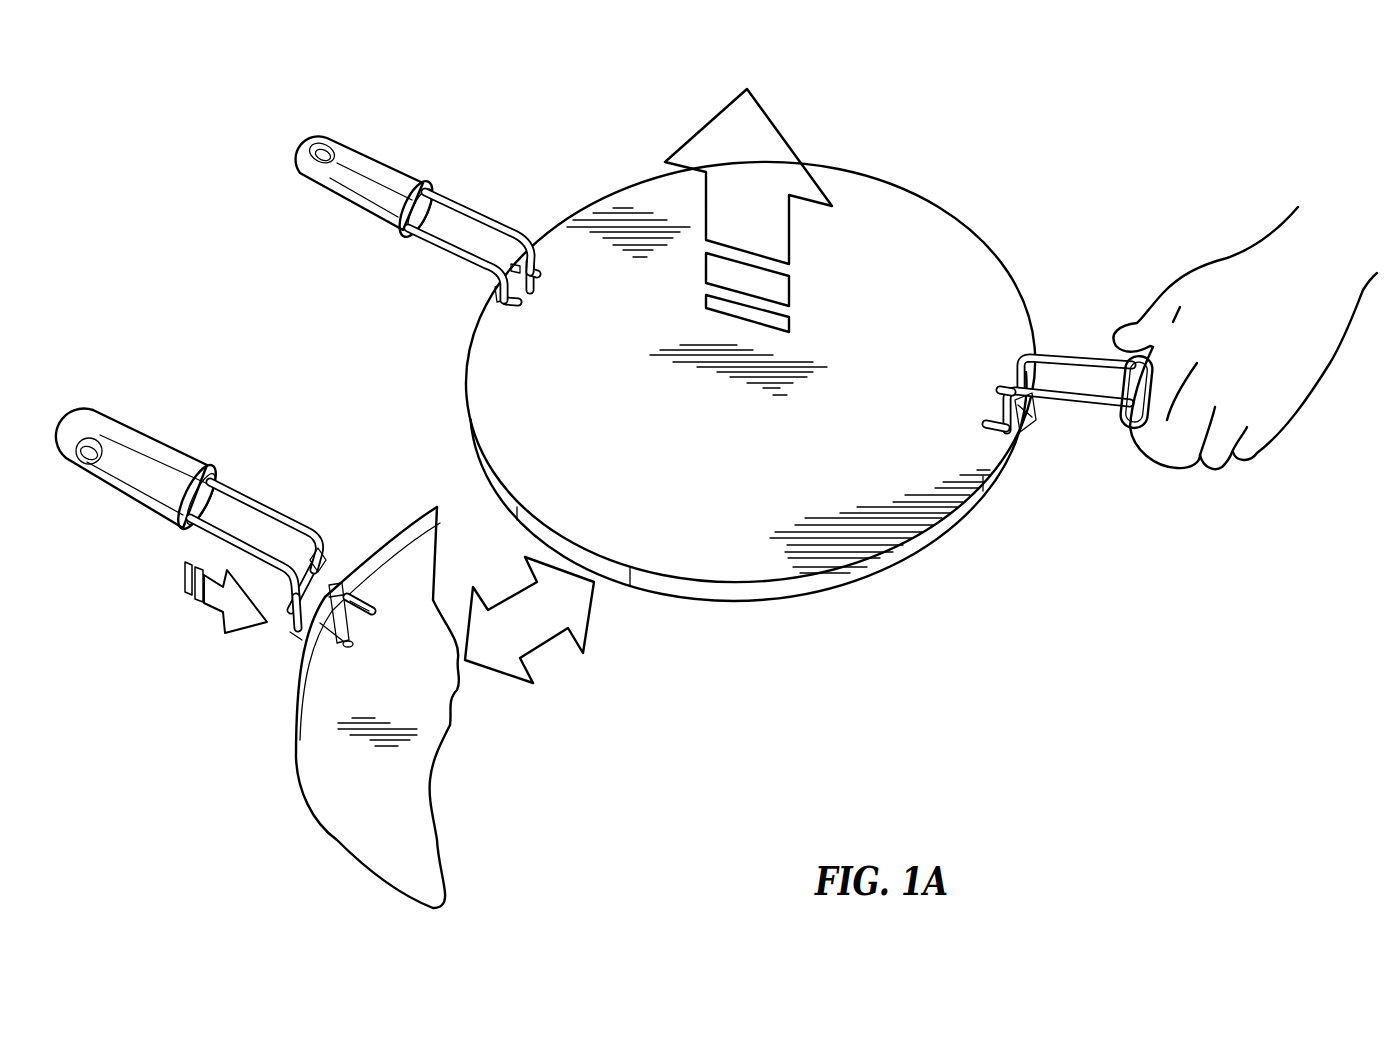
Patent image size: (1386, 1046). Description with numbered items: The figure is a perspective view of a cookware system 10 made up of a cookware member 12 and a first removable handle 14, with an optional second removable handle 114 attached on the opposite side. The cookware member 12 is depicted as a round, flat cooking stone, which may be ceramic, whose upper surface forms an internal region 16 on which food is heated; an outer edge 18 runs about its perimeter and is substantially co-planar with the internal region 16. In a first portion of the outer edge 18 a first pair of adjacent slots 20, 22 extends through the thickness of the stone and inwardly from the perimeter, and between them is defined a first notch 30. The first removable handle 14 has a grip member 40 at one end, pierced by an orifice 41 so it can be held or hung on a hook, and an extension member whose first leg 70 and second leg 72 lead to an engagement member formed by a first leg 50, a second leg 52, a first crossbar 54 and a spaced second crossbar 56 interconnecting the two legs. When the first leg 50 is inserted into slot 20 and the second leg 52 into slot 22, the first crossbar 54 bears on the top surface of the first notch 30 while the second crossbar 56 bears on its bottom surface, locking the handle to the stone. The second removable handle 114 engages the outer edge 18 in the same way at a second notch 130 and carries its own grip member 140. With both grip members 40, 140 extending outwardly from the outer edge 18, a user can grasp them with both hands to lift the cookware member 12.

The cookware system 10 is at (781, 498).
The cookware member 12 is at (932, 183).
The first removable handle 14 is at (292, 409).
The internal region 16 is at (955, 277).
The outer edge 18 is at (670, 590).
The slot 20 is at (536, 268).
The slot 22 is at (509, 306).
The first notch 30 is at (528, 283).
The grip member 40 is at (246, 335).
The orifice 41 is at (322, 148).
The first leg 50 is at (325, 560).
The second leg 52 is at (285, 628).
The first crossbar 54 is at (526, 298).
The second crossbar 56 is at (296, 640).
The first leg of extension member 70 is at (338, 376).
The second leg of extension member 72 is at (440, 245).
The second removable handle 114 is at (1070, 383).
The second notch 130 is at (1034, 414).
The grip member 140 is at (1118, 430).